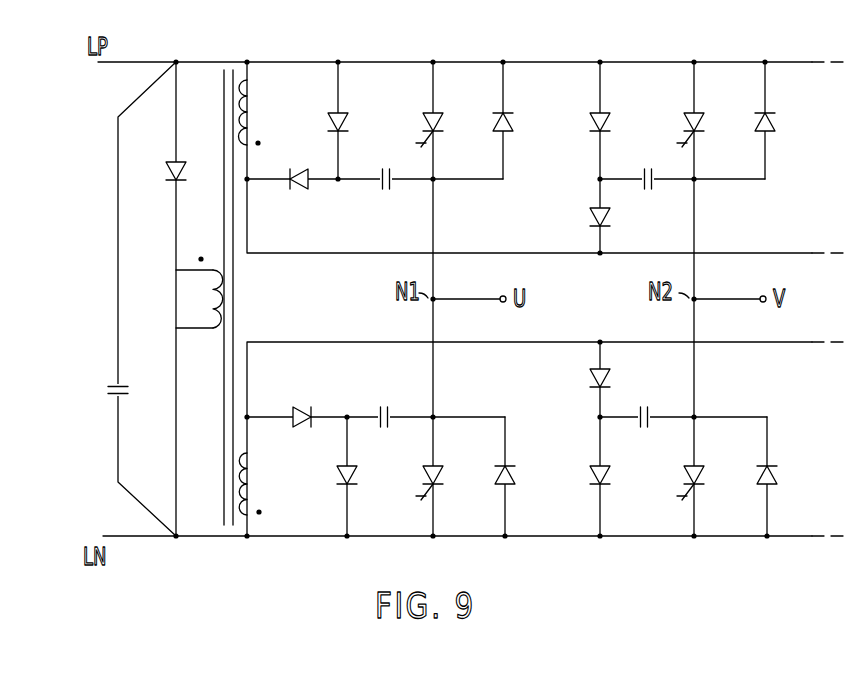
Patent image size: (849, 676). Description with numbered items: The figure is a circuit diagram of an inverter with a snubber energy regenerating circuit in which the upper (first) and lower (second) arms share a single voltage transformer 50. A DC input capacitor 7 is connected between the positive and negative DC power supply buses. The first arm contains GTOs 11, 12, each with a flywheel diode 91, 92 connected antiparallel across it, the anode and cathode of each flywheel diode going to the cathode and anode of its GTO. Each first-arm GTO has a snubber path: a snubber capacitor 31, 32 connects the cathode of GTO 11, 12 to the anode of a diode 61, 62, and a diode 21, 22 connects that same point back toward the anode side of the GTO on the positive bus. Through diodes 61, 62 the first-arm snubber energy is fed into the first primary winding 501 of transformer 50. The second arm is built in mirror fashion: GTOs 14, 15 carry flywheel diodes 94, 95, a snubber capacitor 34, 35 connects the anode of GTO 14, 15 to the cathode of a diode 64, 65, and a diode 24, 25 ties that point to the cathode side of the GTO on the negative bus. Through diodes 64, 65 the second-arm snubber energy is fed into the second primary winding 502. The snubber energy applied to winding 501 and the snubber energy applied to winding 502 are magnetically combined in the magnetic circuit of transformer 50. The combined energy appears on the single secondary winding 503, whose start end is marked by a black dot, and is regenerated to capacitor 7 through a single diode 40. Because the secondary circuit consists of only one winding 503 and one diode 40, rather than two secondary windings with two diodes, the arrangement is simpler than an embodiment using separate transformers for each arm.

The DC input capacitor 7 is at (109, 392).
The diode 40 is at (168, 178).
The transformer 50 is at (235, 301).
The first primary winding 501 is at (248, 113).
The second primary winding 502 is at (250, 487).
The secondary winding 503 is at (204, 294).
The GTO 11 is at (443, 128).
The GTO 12 is at (704, 128).
The GTO 14 is at (443, 473).
The GTO 15 is at (704, 473).
The diode 21 is at (347, 129).
The diode 22 is at (610, 128).
The diode 24 is at (357, 473).
The diode 25 is at (610, 473).
The snubber capacitor 31 is at (386, 191).
The snubber capacitor 32 is at (648, 191).
The snubber capacitor 34 is at (384, 405).
The snubber capacitor 35 is at (644, 405).
The diode 61 is at (299, 190).
The diode 62 is at (590, 214).
The diode 64 is at (301, 406).
The diode 65 is at (589, 376).
The flywheel diode 91 is at (513, 128).
The flywheel diode 92 is at (775, 128).
The flywheel diode 94 is at (515, 473).
The flywheel diode 95 is at (777, 473).